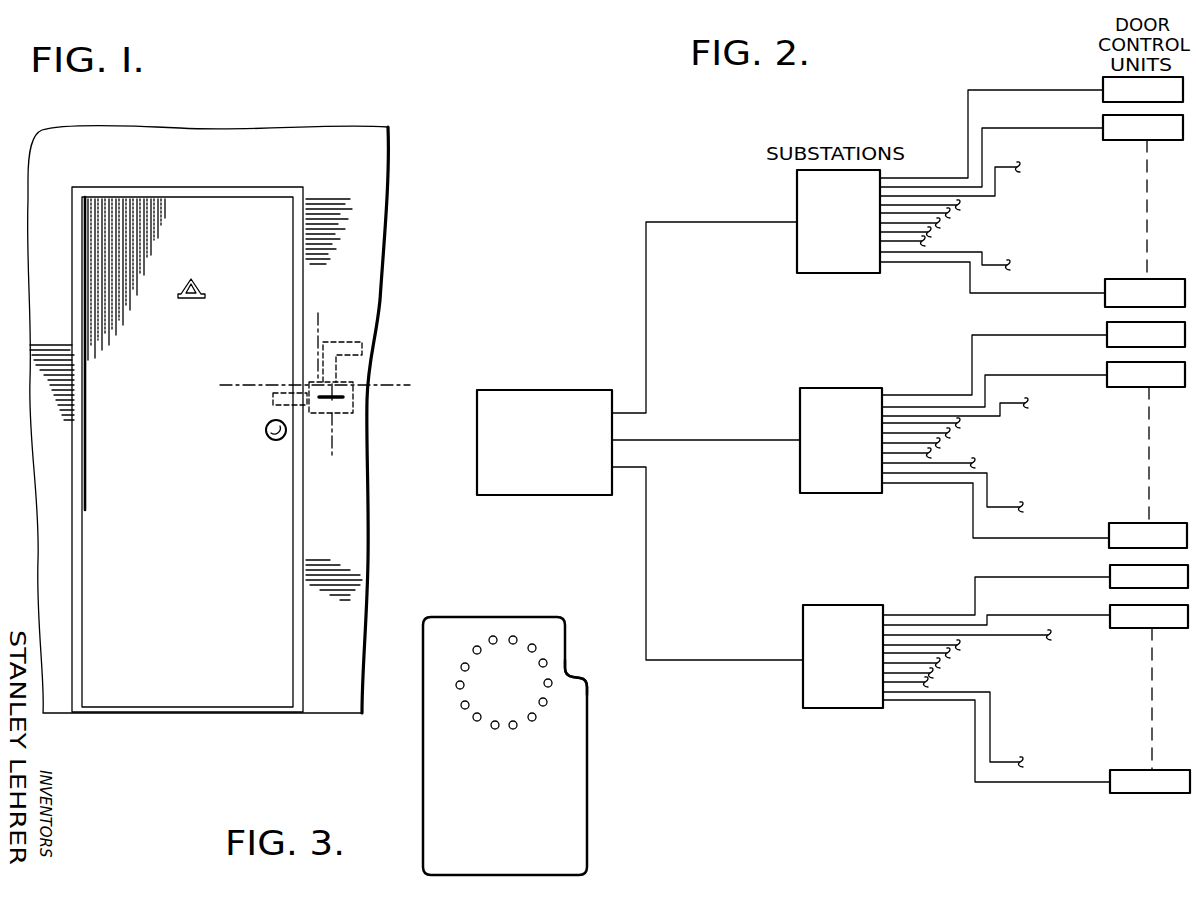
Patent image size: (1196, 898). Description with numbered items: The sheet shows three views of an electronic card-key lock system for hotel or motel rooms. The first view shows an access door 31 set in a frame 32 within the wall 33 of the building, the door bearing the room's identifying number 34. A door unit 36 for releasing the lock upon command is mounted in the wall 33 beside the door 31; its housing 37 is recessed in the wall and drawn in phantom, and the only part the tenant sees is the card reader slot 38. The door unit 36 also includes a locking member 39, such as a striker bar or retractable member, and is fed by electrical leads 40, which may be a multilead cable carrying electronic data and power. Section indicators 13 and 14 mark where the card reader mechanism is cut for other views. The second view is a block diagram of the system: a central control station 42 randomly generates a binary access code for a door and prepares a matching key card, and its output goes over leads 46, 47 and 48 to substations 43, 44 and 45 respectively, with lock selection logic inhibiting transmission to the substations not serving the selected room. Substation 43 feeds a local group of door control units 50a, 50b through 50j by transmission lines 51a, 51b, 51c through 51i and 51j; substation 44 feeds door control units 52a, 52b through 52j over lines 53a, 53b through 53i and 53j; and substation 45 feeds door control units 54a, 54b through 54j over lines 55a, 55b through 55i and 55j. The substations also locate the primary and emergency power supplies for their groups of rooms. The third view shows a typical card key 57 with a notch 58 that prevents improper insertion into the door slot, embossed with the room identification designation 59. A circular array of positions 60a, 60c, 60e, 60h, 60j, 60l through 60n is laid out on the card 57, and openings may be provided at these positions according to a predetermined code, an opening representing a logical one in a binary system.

In FIG. 1, the section line 13- 13 is at (228, 368).
In FIG. 1, the section line 14- 14 is at (332, 323).
In FIG. 1, the access door 31 is at (250, 205).
In FIG. 1, the frame 32 is at (152, 193).
In FIG. 1, the wall 33 is at (87, 169).
In FIG. 1, the identifying number 34 is at (213, 226).
In FIG. 1, the door unit 36 is at (353, 382).
In FIG. 1, the housing 37 is at (348, 412).
In FIG. 1, the card reader slot 38 is at (334, 400).
In FIG. 1, the locking member 39 is at (273, 400).
In FIG. 1, the electrical leads 40 is at (353, 345).
In FIG. 2, the central control station 42 is at (538, 390).
In FIG. 2, the substation 43 is at (852, 236).
In FIG. 2, the substation 44 is at (855, 454).
In FIG. 2, the substation 45 is at (857, 672).
In FIG. 2, the lead 46 is at (646, 287).
In FIG. 2, the lead 47 is at (682, 440).
In FIG. 2, the lead 48 is at (646, 612).
In FIG. 2, the door control unit 50a is at (1143, 89).
In FIG. 2, the door control unit 50b is at (1143, 127).
In FIG. 2, the door control unit 50j is at (1145, 293).
In FIG. 2, the transmission line 51a is at (990, 90).
In FIG. 2, the transmission line 51b is at (998, 128).
In FIG. 2, the transmission line 51c is at (1000, 184).
In FIG. 2, the transmission line 51i is at (994, 260).
In FIG. 2, the transmission line 51j is at (1017, 293).
In FIG. 2, the door control unit 52a is at (1146, 334).
In FIG. 2, the door control unit 52b is at (1146, 374).
In FIG. 2, the door control unit 52j is at (1148, 535).
In FIG. 2, the line 53a is at (1003, 335).
In FIG. 2, the line 53b is at (1035, 375).
In FIG. 2, the line 53i is at (990, 490).
In FIG. 2, the line 53j is at (1020, 538).
In FIG. 2, the door control unit 54a is at (1149, 576).
In FIG. 2, the door control unit 54b is at (1149, 616).
In FIG. 2, the door control unit 54j is at (1150, 781).
In FIG. 2, the line 55a is at (1093, 578).
In FIG. 2, the line 55b is at (1066, 615).
In FIG. 2, the line 55i is at (990, 743).
In FIG. 2, the line 55j is at (1040, 782).
In FIG. 3, the card key 57 is at (588, 776).
In FIG. 3, the notch 58 is at (566, 664).
In FIG. 3, the room identification designation 59 is at (530, 843).
In FIG. 3, the position 60a is at (513, 636).
In FIG. 3, the position 60c is at (547, 660).
In FIG. 3, the position 60e is at (561, 721).
In FIG. 3, the position 60h is at (495, 729).
In FIG. 3, the position 60j is at (465, 709).
In FIG. 3, the position 60l is at (462, 665).
In FIG. 3, the position 60n is at (493, 636).